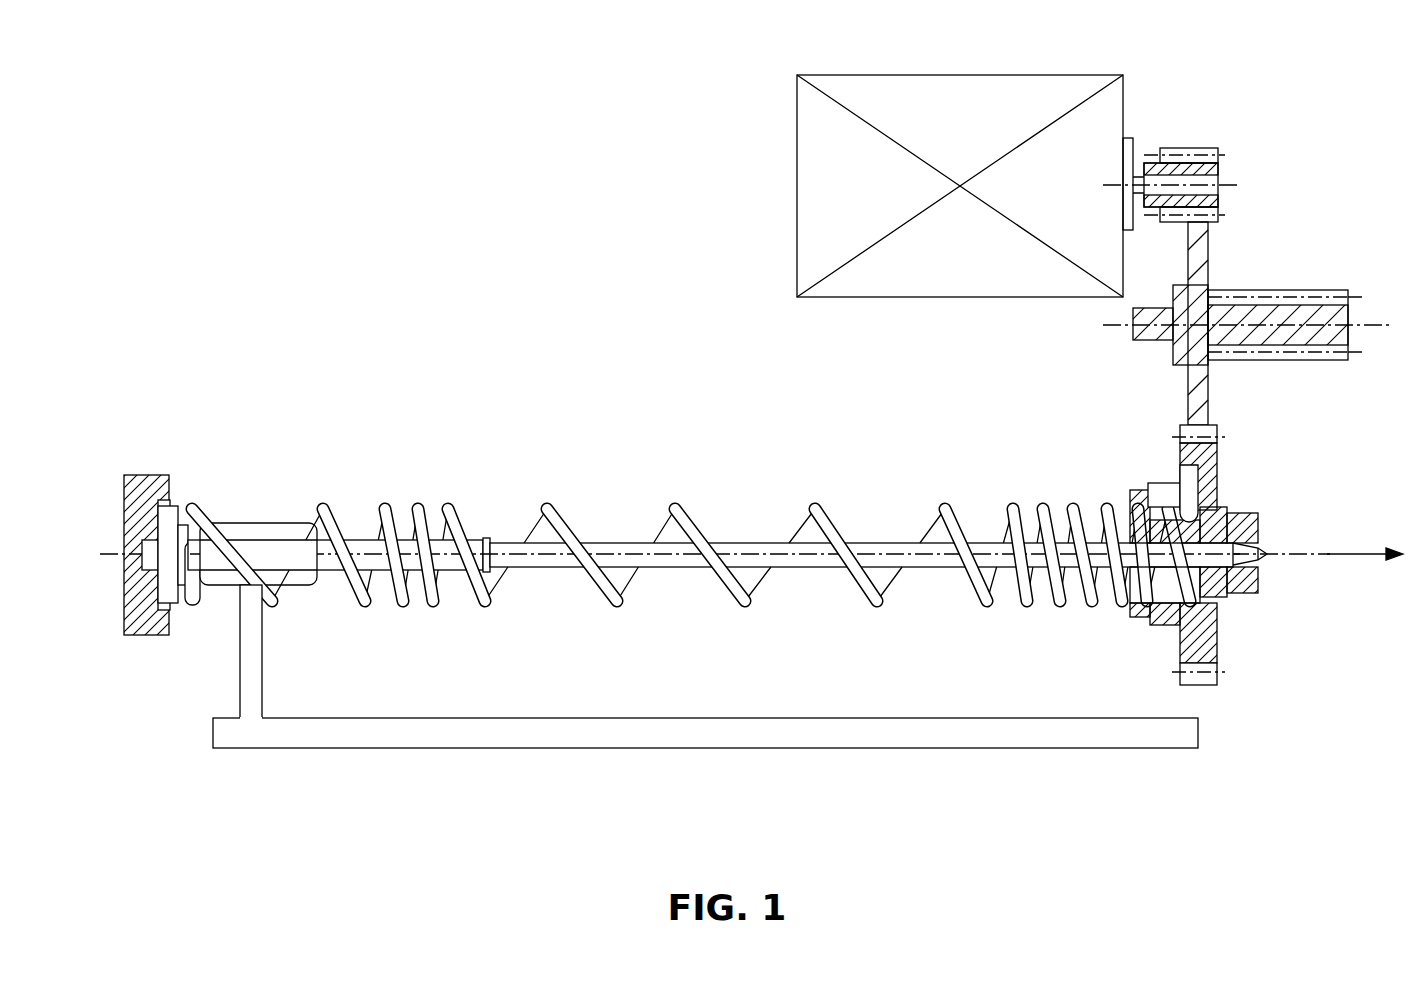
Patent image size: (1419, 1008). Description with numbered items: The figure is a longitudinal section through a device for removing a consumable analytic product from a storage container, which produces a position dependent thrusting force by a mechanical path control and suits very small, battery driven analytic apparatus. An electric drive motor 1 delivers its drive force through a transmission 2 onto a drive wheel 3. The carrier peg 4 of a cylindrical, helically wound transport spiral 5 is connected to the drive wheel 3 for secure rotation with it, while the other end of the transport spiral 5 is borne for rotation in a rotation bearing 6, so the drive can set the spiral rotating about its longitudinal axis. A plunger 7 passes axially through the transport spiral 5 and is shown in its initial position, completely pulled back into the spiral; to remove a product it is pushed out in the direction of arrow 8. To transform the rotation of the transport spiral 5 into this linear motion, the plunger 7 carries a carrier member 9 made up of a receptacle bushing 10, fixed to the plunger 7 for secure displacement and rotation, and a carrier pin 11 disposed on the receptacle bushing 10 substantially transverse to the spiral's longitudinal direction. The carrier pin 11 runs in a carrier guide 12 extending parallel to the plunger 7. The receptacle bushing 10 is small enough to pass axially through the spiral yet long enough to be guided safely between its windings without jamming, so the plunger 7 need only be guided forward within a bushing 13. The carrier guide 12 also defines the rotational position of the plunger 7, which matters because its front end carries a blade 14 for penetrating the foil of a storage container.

The electric drive motor 1 is at (830, 192).
The transmission 2 is at (1265, 296).
The drive wheel 3 is at (1243, 527).
The carrier peg 4 is at (1192, 487).
The transport spiral 5 is at (815, 508).
The rotation bearing 6 is at (171, 514).
The plunger 7 is at (640, 553).
The arrow 8 is at (1367, 551).
The carrier member 9 is at (202, 670).
The receptacle bushing 10 is at (268, 535).
The carrier pin 11 is at (250, 650).
The carrier guide 12 is at (635, 735).
The bushing 13 is at (1252, 596).
The blade 14 is at (1268, 560).